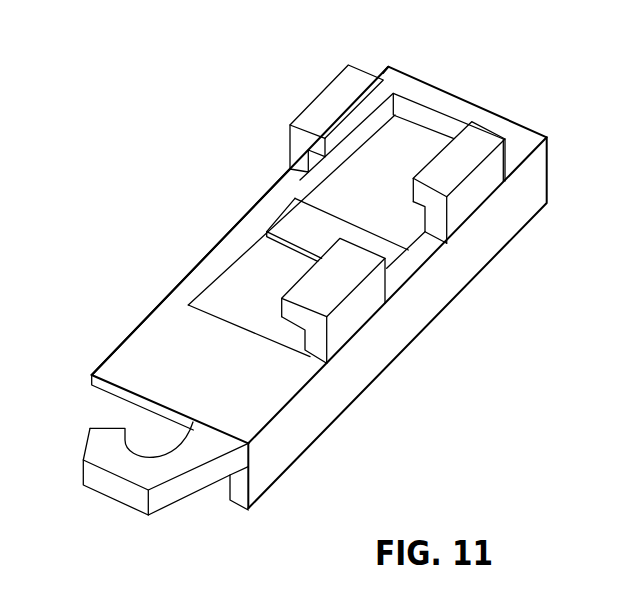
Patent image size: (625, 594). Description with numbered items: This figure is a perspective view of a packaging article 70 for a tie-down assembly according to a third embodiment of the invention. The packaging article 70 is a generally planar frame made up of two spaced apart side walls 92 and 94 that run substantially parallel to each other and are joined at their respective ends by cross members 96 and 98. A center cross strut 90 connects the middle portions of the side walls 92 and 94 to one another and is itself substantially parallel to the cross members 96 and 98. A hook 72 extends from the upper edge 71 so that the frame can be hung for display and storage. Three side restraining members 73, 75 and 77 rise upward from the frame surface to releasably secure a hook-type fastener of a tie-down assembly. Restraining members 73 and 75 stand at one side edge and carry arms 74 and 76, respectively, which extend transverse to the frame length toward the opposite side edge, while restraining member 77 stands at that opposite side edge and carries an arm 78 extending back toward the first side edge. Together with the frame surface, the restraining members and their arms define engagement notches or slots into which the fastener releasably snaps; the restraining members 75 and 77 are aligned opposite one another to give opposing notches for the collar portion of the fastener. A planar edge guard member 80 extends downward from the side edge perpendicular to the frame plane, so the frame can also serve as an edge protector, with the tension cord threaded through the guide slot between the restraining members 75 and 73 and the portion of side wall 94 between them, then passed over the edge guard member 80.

The packaging article 70 is at (520, 460).
The upper edge 71 is at (105, 378).
The hook 72 is at (187, 480).
The restraining member 73 is at (318, 333).
The arm 74 is at (352, 275).
The restraining member 75 is at (440, 213).
The arm 76 is at (480, 140).
The restraining member 77 is at (298, 158).
The arm 78 is at (345, 95).
The edge guard member 80 is at (292, 447).
The center cross strut 90 is at (297, 232).
The side wall 92 is at (188, 287).
The side wall 94 is at (398, 283).
The cross member 96 is at (160, 350).
The cross member 98 is at (445, 100).